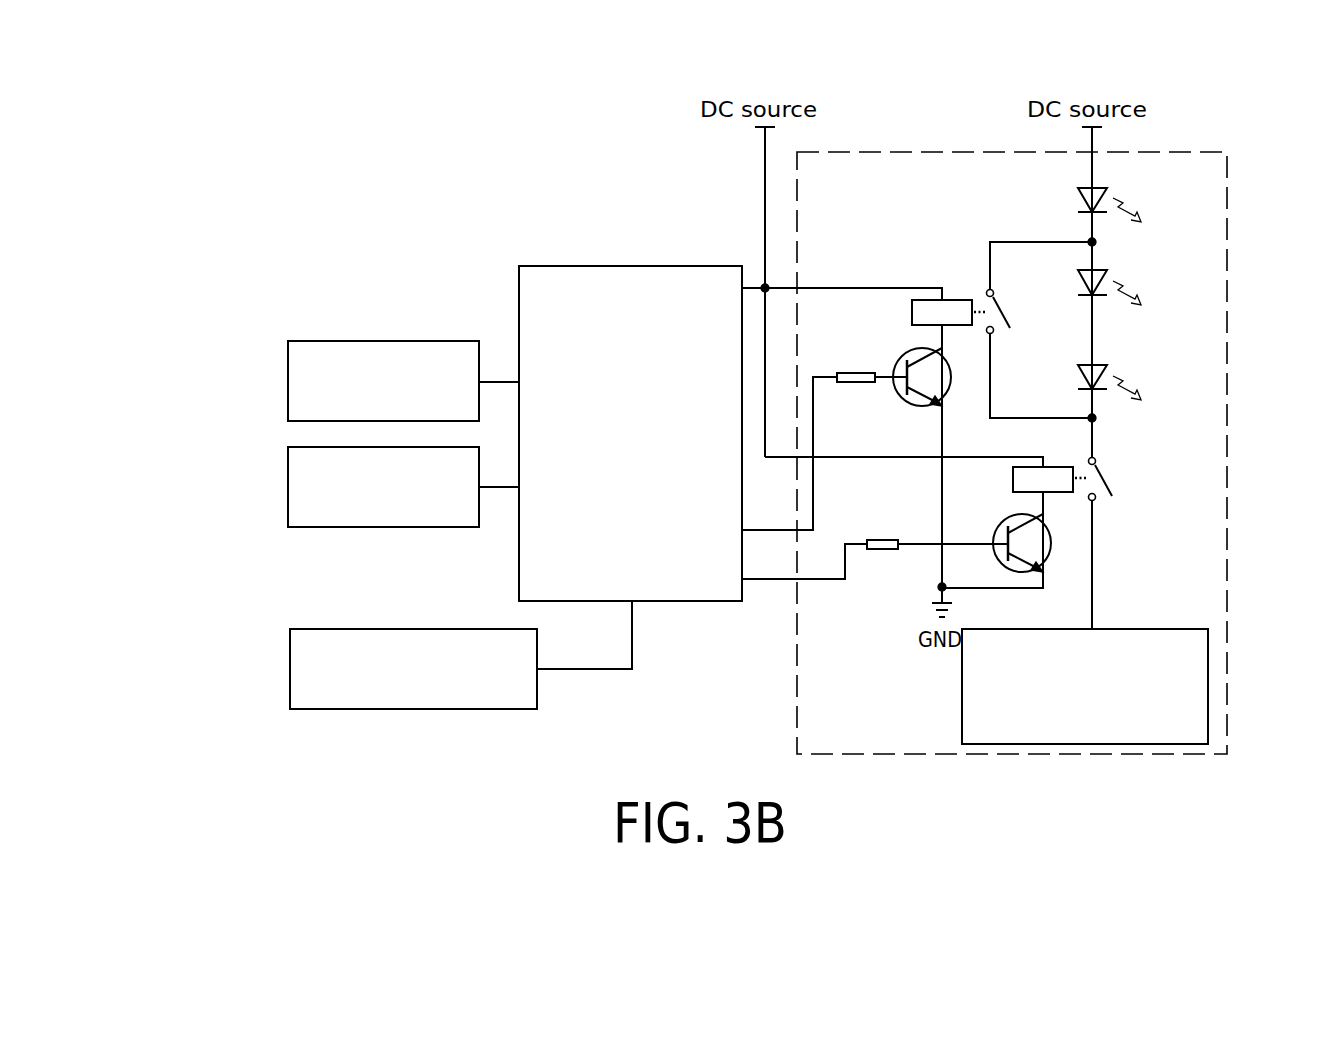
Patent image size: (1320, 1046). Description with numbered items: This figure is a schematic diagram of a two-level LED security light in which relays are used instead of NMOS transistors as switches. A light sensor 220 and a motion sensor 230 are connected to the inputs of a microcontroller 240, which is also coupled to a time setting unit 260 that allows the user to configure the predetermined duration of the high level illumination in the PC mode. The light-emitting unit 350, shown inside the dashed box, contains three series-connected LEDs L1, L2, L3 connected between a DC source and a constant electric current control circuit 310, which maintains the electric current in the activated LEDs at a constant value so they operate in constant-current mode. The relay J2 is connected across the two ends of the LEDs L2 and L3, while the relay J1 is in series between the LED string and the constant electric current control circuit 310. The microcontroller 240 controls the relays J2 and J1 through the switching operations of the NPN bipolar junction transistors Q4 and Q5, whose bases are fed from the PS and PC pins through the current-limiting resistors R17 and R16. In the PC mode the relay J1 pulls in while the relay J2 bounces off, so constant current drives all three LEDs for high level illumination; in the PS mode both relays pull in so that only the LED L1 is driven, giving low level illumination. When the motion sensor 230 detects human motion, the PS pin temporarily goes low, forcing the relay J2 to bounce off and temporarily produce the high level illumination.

The light sensor 220 is at (288, 381).
The motion sensor 230 is at (288, 486).
The microcontroller 240 is at (631, 266).
The time setting unit 260 is at (290, 669).
The constant electric current control circuit 310 is at (1208, 686).
The light-emitting unit 350 is at (1230, 253).
The LED L1 is at (1111, 200).
The LED L2 is at (1111, 283).
The LED L3 is at (1111, 378).
The relay J1 is at (1077, 479).
The relay J2 is at (1002, 330).
The NPN bipolar junction transistor Q4 is at (927, 456).
The NPN bipolar junction transistor Q5 is at (1012, 542).
The resistor R16 is at (875, 546).
The resistor R17 is at (808, 438).